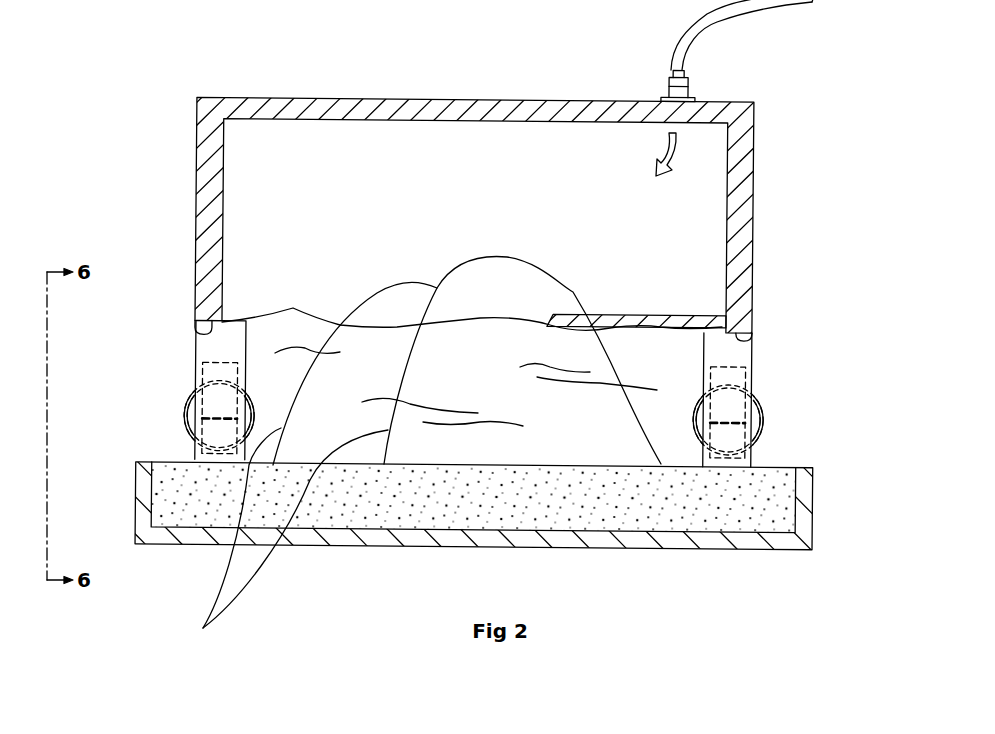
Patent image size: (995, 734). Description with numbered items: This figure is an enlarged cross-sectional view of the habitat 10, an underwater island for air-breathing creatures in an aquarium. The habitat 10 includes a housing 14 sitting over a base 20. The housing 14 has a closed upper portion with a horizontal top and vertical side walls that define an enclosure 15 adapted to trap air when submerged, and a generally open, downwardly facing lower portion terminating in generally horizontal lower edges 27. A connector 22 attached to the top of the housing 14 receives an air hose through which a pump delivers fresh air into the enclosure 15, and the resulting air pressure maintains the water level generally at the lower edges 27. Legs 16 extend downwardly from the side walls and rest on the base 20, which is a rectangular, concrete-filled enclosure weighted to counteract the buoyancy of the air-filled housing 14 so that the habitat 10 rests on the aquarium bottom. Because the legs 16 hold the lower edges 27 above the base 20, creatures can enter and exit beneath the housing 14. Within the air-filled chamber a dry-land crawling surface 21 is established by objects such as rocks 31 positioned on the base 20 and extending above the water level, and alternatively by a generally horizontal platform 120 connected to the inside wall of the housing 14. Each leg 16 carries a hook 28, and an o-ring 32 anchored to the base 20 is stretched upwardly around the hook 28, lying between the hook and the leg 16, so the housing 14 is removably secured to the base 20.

The habitat 10 is at (779, 114).
The housing 14 is at (753, 243).
The enclosure 15 is at (728, 134).
The legs 16 is at (192, 350).
The base 20 is at (812, 520).
The crawling surface 21 is at (553, 270).
The connector 22 is at (663, 88).
The lower edges 27 is at (193, 334).
The hook 28 is at (194, 372).
The rocks 31 is at (278, 537).
The o-ring 32 is at (185, 402).
The platform 120 is at (745, 370).